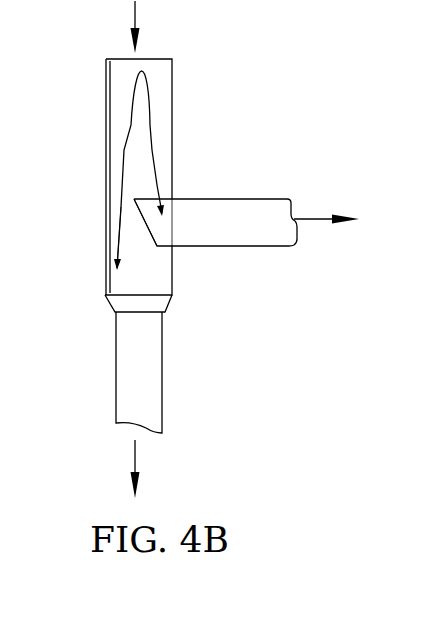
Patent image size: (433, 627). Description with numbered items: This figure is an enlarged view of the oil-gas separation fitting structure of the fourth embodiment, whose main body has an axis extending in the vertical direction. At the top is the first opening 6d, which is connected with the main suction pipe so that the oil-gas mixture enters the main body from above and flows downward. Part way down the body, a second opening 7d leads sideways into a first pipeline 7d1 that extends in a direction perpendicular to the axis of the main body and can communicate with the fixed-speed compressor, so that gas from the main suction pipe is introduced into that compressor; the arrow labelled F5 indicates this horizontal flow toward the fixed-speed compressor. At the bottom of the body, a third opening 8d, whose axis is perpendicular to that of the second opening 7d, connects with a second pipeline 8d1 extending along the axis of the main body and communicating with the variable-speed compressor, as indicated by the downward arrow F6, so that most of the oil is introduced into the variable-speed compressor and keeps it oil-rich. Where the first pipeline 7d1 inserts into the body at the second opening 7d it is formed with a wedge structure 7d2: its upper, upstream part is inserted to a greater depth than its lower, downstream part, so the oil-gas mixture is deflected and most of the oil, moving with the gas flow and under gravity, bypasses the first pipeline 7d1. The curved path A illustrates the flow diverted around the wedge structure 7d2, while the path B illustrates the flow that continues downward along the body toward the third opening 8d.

The first opening 6d is at (122, 68).
The second opening 7d is at (174, 240).
The first pipeline 7d1 is at (175, 220).
The wedge structure 7d2 is at (137, 212).
The third opening 8d is at (133, 306).
The second pipeline 8d1 is at (135, 320).
The flow path A is at (157, 148).
The flow path B is at (122, 228).
The force/flow direction F5 is at (326, 205).
The force/flow direction F6 is at (124, 249).